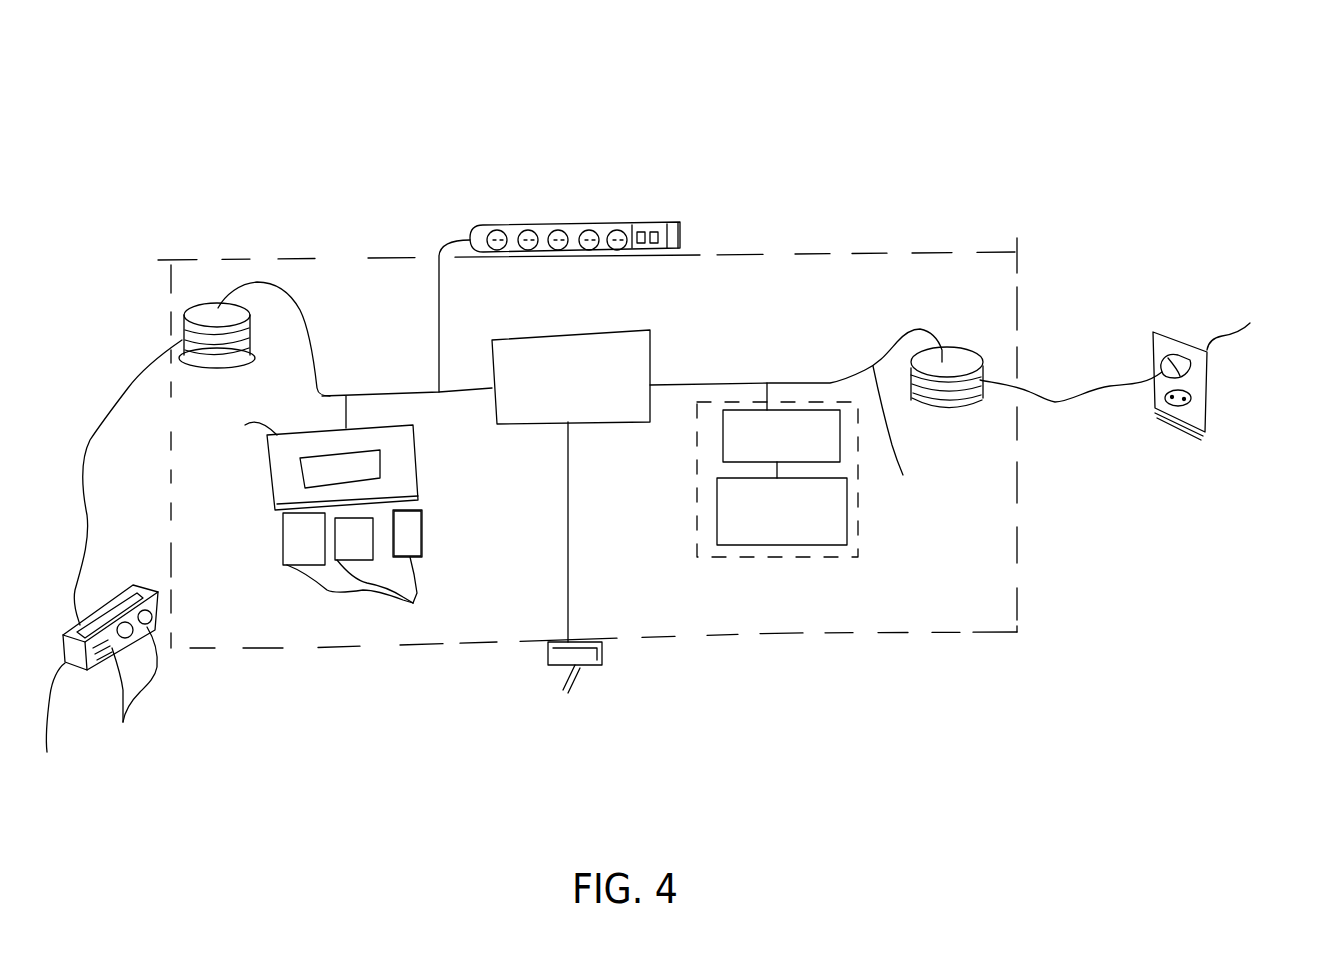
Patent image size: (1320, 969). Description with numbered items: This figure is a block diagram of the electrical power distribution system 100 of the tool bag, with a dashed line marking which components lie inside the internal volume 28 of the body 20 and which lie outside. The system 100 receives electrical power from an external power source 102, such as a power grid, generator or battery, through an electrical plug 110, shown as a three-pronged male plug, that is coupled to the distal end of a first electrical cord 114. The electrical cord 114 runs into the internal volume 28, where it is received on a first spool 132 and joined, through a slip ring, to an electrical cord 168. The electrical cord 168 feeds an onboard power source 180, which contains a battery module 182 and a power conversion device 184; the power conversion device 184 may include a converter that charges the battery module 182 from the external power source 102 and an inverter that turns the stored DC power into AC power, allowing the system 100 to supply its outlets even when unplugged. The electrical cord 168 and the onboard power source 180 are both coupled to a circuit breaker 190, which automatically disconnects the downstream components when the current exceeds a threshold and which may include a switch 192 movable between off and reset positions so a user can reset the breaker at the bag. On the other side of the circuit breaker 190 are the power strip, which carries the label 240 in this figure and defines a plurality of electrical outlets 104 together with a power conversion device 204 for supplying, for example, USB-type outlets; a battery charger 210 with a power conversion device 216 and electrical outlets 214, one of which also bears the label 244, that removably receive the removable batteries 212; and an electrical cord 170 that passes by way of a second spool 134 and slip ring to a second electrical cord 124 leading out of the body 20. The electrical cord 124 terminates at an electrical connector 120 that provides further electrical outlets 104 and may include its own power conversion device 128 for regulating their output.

The electrical power distribution system 100 is at (1135, 100).
The body 20 is at (748, 250).
The internal volume 28 is at (866, 284).
The power strip 240 is at (476, 222).
The electrical outlets 104 is at (600, 227).
The power conversion device 204 is at (677, 222).
The spool 134 is at (218, 310).
The electrical cord 170 is at (265, 280).
The electrical cord 124 is at (98, 427).
The power conversion device 128 is at (110, 607).
The electrical connector 120 is at (48, 726).
The battery charger 210 is at (422, 460).
The power conversion device 216 is at (233, 433).
The electrical outlet 214 is at (280, 521).
The terminal 244 is at (422, 510).
The removable batteries 212 is at (367, 592).
The circuit breaker 190 is at (650, 330).
The switch 192 is at (602, 665).
The onboard power source 180 is at (880, 538).
The power conversion device 184 is at (723, 437).
The battery module 182 is at (780, 545).
The spool 132 is at (963, 348).
The electrical cord 168 is at (915, 435).
The electrical cord 114 is at (1043, 395).
The electrical plug 110 is at (1178, 350).
The external power source 102 is at (1259, 319).